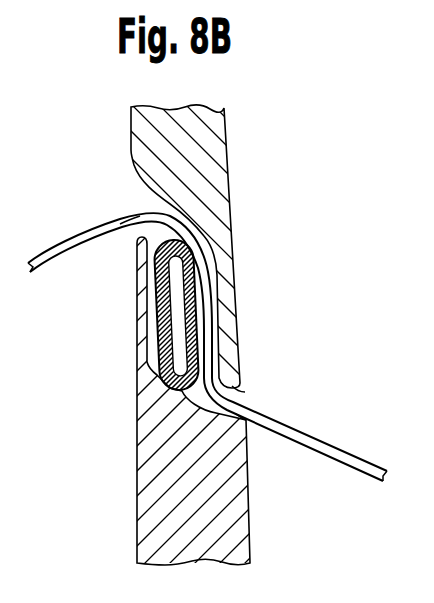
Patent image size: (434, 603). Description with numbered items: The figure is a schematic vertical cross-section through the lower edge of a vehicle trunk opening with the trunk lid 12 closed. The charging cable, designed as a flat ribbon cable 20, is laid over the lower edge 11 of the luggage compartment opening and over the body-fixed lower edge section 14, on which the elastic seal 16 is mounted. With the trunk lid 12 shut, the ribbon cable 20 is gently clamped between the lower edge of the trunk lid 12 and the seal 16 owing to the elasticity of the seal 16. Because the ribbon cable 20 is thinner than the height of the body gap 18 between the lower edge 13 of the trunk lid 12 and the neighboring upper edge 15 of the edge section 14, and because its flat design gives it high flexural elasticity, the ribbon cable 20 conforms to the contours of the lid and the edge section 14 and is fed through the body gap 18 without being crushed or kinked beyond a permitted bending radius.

The trunk lid 12 is at (206, 163).
The lower edge section of the luggage compartment opening 14 is at (182, 482).
The seal 16 is at (165, 330).
The ribbon cable 20 is at (95, 226).
The lower edge of the luggage compartment opening 11 is at (138, 237).
The lower edge of the trunk lid 13 is at (238, 387).
The upper edge of the edge section 15 is at (238, 415).
The body gap 18 is at (270, 398).